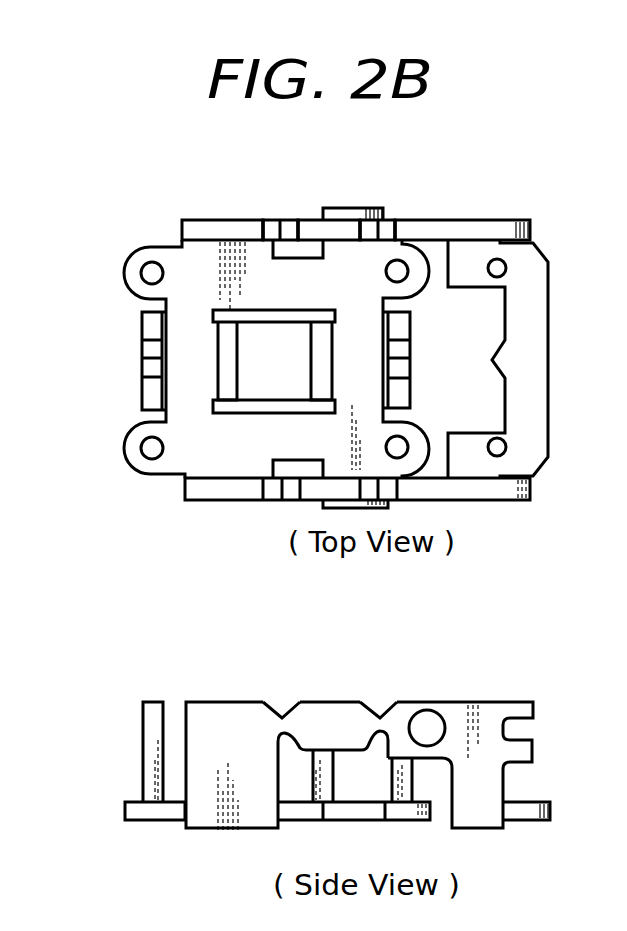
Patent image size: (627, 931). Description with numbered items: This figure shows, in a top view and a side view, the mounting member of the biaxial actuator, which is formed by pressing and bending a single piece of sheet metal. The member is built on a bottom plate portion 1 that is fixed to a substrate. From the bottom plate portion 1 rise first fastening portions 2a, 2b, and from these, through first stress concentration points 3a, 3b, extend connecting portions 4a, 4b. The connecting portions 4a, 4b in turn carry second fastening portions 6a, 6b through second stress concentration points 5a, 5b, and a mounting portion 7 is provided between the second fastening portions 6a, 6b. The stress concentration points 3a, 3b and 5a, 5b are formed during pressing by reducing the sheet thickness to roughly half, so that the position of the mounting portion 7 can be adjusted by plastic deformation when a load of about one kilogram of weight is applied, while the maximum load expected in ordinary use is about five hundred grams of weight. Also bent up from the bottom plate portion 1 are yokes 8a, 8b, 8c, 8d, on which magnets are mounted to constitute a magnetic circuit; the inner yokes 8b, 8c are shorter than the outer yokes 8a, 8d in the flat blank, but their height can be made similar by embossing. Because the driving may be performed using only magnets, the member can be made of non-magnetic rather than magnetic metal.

The bottom plate portion 1 is at (150, 823).
The first fastening portion 2a is at (212, 228).
The first fastening portion 2b is at (223, 715).
The first stress concentration point 3a is at (288, 228).
The first stress concentration point 3b is at (282, 710).
The connecting portion 4a is at (313, 228).
The connecting portion 4b is at (340, 712).
The second stress concentration point 5a is at (388, 228).
The second stress concentration point 5b is at (382, 712).
The second fastening portion 6a is at (468, 228).
The second fastening portion 6b is at (513, 728).
The mounting portion 7 is at (548, 360).
The yoke 8a is at (142, 348).
The yoke 8b is at (230, 367).
The yoke 8c is at (310, 340).
The yoke 8d is at (405, 347).